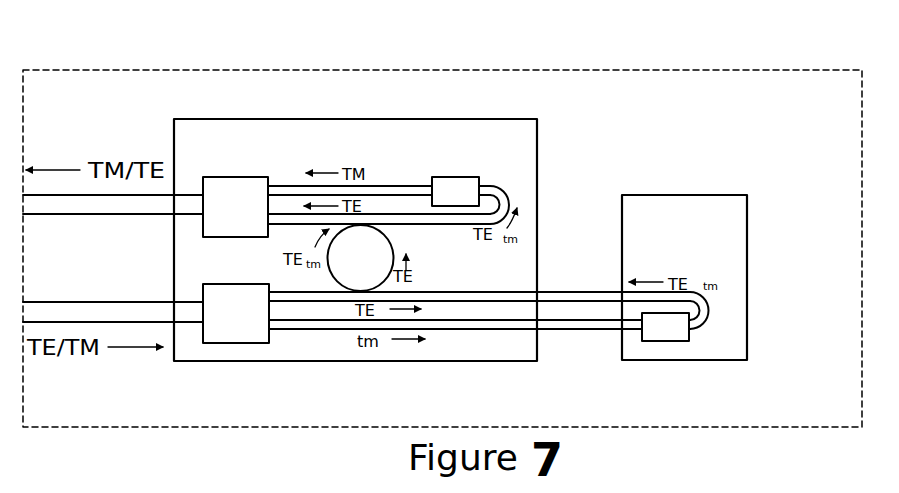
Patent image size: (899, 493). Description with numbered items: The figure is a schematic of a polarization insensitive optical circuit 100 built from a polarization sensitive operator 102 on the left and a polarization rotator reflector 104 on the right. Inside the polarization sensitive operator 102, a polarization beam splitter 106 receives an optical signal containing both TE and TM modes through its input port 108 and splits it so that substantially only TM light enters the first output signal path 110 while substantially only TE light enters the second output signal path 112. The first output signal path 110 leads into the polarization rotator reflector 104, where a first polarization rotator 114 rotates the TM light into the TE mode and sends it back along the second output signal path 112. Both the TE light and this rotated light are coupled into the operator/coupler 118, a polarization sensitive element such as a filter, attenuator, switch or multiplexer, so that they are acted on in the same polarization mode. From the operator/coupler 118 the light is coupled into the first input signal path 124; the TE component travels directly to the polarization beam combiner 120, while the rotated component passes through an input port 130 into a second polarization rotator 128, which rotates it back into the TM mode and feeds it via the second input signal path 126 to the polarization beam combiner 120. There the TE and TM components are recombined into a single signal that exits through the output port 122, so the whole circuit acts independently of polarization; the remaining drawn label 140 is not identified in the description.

The polarization insensitive optical circuit 100 is at (474, 56).
The polarization sensitive operator 102 is at (174, 119).
The polarization rotator reflector 104 is at (747, 203).
The polarization beam splitter 106 is at (230, 284).
The input port 108 is at (100, 302).
The first output signal path 110 is at (300, 330).
The second output signal path 112 is at (305, 292).
The first polarization rotator 114 is at (663, 341).
The operator/coupler 118 is at (390, 240).
The polarization beam combiner 120 is at (222, 177).
The output port 122 is at (60, 214).
The first input signal path 124 is at (282, 226).
The second input signal path 126 is at (282, 186).
The second polarization rotator 128 is at (442, 177).
The input port 130 is at (488, 187).
The optical path 140 is at (305, 481).